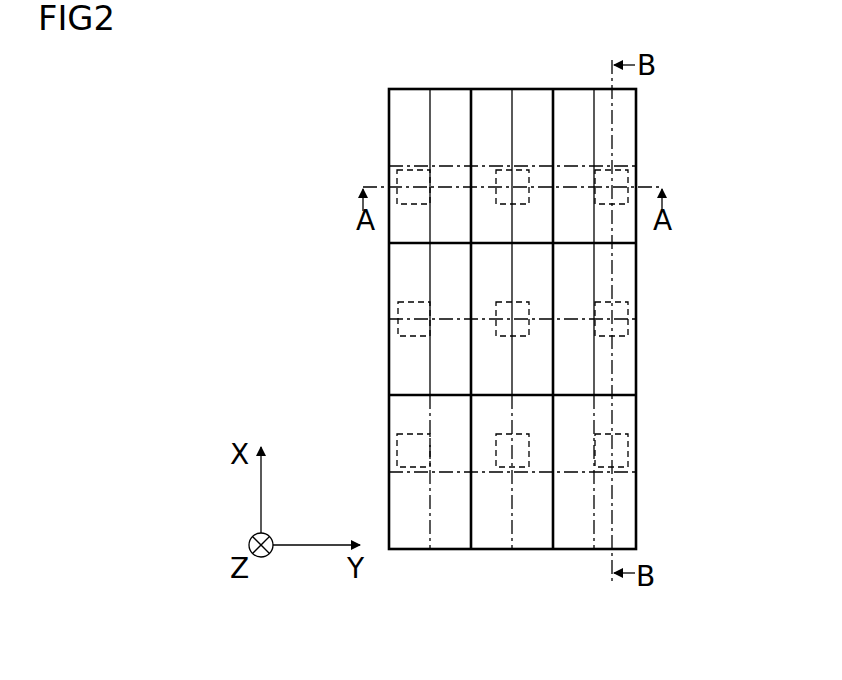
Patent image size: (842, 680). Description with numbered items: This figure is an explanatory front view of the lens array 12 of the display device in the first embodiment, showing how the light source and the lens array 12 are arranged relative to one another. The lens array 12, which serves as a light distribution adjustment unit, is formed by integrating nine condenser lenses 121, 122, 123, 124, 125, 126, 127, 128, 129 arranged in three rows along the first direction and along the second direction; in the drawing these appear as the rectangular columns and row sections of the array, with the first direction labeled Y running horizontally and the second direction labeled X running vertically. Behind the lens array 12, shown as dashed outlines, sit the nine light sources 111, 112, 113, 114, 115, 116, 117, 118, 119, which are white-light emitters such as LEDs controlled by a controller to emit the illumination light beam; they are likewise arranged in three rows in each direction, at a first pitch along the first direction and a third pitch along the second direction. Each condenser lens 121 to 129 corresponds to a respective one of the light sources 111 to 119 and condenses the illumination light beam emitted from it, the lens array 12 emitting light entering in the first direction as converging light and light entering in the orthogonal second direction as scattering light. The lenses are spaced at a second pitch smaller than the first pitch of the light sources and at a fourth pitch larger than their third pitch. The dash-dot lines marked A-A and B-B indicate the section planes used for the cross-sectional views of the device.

The lens array 12 is at (637, 102).
The condenser lens 121 is at (618, 145).
The condenser lens 122 is at (497, 135).
The condenser lens 123 is at (423, 130).
The condenser lens 124 is at (618, 282).
The condenser lens 125 is at (488, 272).
The condenser lens 126 is at (402, 290).
The condenser lens 127 is at (618, 497).
The condenser lens 128 is at (523, 497).
The condenser lens 129 is at (445, 515).
The light source 111 is at (637, 165).
The light source 112 is at (522, 170).
The light source 113 is at (397, 170).
The light source 114 is at (618, 337).
The light source 115 is at (497, 336).
The light source 116 is at (395, 328).
The light source 117 is at (620, 433).
The light source 118 is at (507, 468).
The light source 119 is at (413, 432).